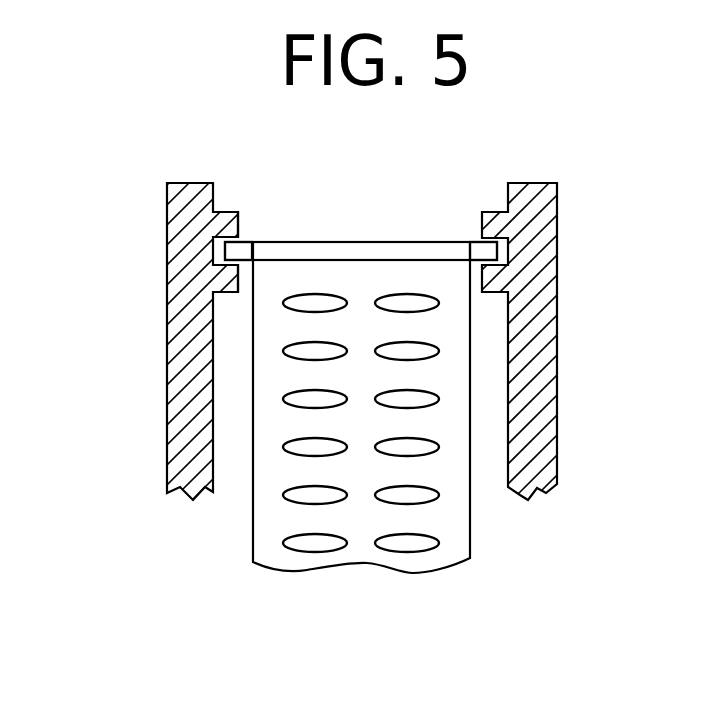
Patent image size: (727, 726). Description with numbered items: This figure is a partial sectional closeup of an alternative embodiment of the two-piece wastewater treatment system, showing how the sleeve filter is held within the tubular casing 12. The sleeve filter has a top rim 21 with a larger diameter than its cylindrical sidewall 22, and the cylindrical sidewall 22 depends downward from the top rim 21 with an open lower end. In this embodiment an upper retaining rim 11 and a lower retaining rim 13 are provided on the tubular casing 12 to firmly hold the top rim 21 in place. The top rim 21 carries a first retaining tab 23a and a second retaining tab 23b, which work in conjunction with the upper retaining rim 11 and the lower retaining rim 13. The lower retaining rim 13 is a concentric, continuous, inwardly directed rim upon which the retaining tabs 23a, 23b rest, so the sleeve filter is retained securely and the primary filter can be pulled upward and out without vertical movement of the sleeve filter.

The upper retaining rim 11 is at (222, 212).
The tubular casing 12 is at (192, 367).
The lower retaining rim 13 is at (490, 293).
The top rim 21 is at (360, 242).
The cylindrical sidewall 22 is at (267, 530).
The first retaining tab 23a is at (233, 248).
The second retaining tab 23b is at (480, 250).